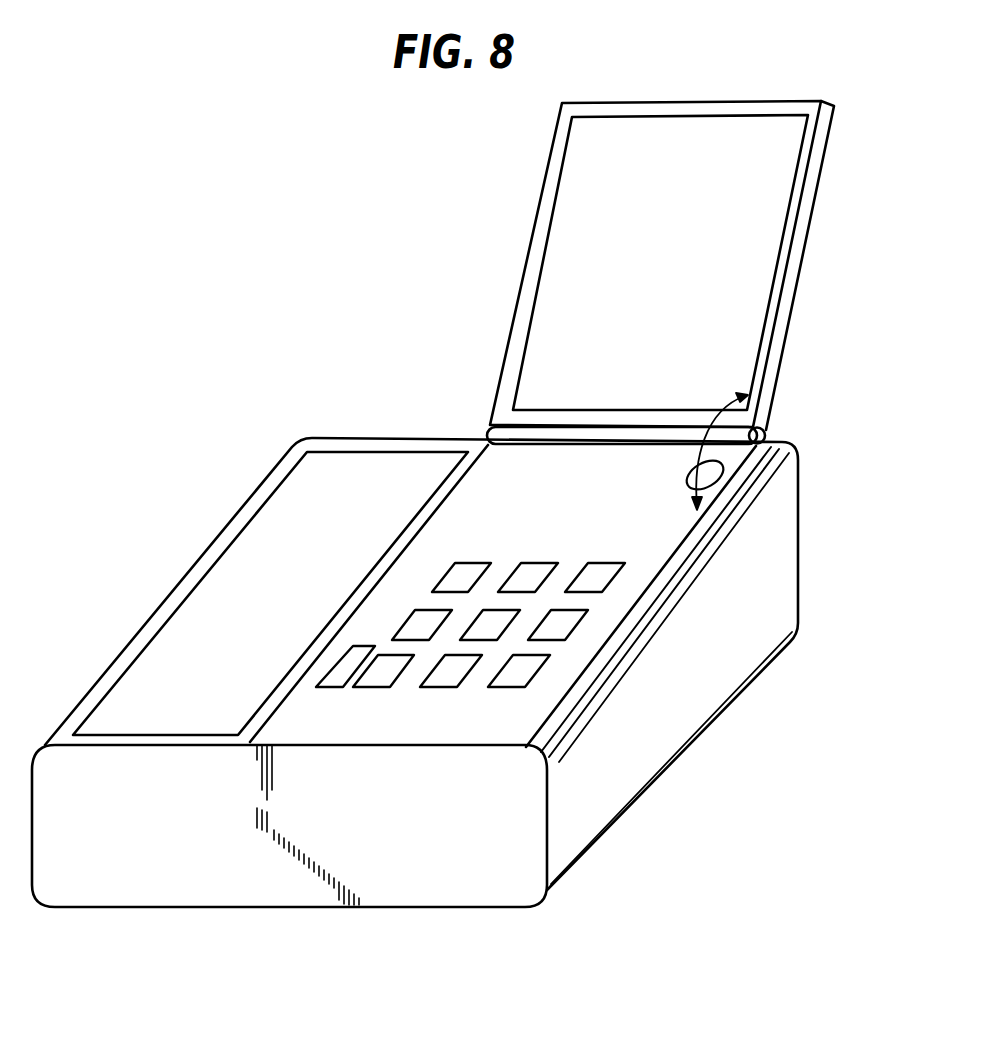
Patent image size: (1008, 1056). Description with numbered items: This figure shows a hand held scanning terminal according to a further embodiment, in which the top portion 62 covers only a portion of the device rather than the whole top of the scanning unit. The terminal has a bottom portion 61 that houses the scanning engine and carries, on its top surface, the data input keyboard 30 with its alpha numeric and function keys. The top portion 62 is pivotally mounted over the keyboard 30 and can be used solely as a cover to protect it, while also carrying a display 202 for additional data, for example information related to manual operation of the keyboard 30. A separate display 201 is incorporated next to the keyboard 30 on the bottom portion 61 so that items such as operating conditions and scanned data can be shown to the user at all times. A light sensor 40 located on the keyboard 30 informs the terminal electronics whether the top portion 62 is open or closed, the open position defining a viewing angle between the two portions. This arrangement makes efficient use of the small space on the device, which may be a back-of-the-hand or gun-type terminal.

The bottom portion 61 is at (625, 737).
The top portion 62 is at (812, 183).
The display 201 is at (182, 653).
The display 202 is at (577, 260).
The data input keyboard 30 is at (588, 640).
The light sensor 40 is at (707, 472).